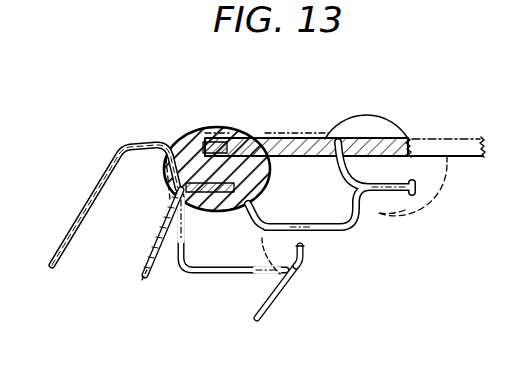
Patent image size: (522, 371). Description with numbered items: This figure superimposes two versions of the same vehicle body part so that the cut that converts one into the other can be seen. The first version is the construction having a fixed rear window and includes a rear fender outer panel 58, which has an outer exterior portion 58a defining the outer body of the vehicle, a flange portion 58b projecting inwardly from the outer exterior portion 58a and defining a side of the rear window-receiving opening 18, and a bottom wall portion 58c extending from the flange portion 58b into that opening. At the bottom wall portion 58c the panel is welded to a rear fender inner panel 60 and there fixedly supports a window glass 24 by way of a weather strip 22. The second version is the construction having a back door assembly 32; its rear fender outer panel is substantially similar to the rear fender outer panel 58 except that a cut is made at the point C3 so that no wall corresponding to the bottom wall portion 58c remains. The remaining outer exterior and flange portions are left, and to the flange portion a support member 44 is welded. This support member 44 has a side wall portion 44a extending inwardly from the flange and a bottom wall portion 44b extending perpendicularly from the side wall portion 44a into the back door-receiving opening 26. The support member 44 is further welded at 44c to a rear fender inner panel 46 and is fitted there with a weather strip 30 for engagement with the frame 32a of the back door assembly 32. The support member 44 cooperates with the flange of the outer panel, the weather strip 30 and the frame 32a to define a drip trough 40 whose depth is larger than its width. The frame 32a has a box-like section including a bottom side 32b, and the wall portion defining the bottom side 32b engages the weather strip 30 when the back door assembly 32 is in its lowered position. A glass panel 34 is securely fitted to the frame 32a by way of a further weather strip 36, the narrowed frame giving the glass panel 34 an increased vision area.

The rear window-receiving opening 18 is at (486, 202).
The weather strip 22 is at (232, 136).
The window glass 24 is at (310, 148).
The back door-receiving opening 26 is at (517, 202).
The weather strip 30 is at (320, 244).
The back door assembly 32 is at (411, 139).
The frame 32a is at (276, 130).
The bottom side 32b is at (341, 231).
The glass panel 34 is at (455, 141).
The weather strip 36 is at (420, 204).
The drip trough 40 is at (228, 240).
The support member 44 is at (200, 278).
The side wall portion 44a is at (162, 268).
The bottom wall portion 44b is at (266, 305).
The weld location 44c is at (290, 290).
The rear fender inner panel 46 is at (298, 283).
The rear fender outer panel 58 is at (97, 180).
The outer exterior portion 58a is at (140, 145).
The flange portion 58b is at (176, 142).
The bottom wall portion 58c is at (200, 147).
The rear fender inner panel 60 is at (143, 262).
The cut point C3 is at (176, 188).